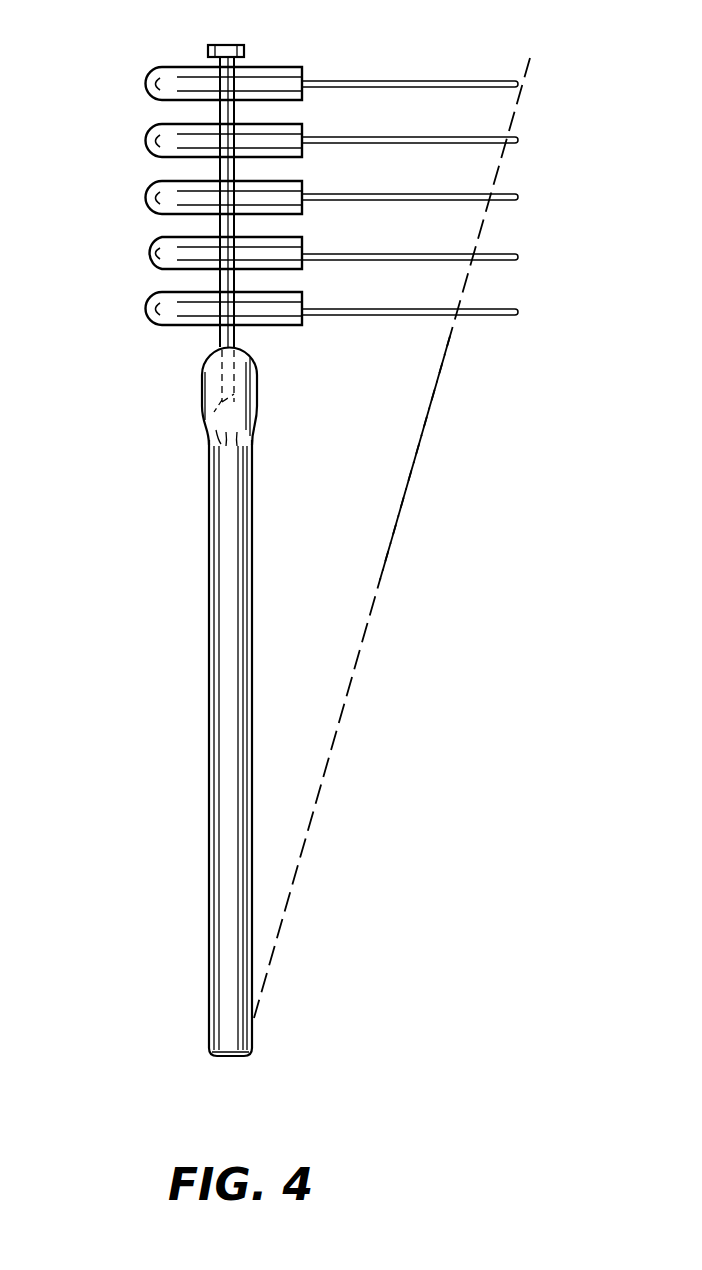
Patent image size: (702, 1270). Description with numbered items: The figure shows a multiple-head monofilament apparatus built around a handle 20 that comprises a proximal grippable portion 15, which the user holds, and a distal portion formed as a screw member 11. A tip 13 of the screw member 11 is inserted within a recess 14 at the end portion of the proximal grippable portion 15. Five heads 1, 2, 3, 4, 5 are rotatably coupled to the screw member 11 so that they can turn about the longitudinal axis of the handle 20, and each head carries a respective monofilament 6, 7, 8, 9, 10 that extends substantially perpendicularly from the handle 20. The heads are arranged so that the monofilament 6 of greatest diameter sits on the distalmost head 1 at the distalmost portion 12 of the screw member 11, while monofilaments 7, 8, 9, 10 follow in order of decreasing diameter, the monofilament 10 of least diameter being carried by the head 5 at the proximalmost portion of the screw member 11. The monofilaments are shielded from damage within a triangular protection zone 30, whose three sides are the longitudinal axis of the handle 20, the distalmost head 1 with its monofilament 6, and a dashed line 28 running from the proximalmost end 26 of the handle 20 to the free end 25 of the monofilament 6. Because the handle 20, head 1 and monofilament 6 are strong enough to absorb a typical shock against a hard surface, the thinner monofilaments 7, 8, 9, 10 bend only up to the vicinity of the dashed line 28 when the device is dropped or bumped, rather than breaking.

The head 1 is at (150, 85).
The head 2 is at (152, 144).
The head 3 is at (152, 200).
The head 4 is at (152, 255).
The head 5 is at (152, 311).
The monofilament 6 is at (423, 80).
The monofilament 7 is at (519, 140).
The monofilament 8 is at (517, 197).
The monofilament 9 is at (517, 257).
The monofilament 10 is at (518, 312).
The screw member 11 is at (223, 109).
The distalmost portion 12 is at (240, 45).
The tip 13 is at (227, 380).
The recess 14 is at (205, 424).
The proximal grippable portion 15 is at (209, 797).
The handle 20 is at (230, 687).
The free end 25 is at (525, 75).
The proximalmost end 26 is at (215, 1056).
The dashed line 28 is at (398, 525).
The protection zone 30 is at (390, 379).